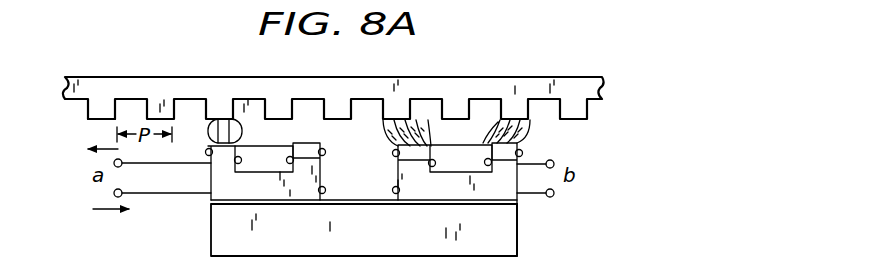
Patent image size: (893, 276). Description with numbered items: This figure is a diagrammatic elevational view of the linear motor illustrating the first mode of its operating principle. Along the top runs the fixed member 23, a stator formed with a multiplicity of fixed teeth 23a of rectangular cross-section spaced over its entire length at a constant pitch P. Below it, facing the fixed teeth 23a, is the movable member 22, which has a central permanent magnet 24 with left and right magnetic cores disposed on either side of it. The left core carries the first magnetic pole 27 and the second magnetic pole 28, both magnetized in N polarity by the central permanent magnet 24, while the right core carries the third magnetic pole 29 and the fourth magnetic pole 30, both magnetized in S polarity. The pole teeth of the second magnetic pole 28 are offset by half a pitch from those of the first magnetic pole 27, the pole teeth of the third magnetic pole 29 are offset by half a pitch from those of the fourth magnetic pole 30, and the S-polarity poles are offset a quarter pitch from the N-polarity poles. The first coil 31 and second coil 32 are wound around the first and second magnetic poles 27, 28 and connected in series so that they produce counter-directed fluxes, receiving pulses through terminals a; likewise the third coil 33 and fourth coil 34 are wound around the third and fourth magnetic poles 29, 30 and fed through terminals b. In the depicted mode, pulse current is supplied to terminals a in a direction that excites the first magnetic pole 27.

The first movable member 22 is at (207, 227).
The fixed member 23 is at (126, 79).
The fixed teeth 23a is at (103, 122).
The central permanent magnet 24 is at (519, 230).
The first magnetic pole 27 is at (241, 118).
The second magnetic pole 28 is at (302, 142).
The third magnetic pole 29 is at (433, 143).
The fourth magnetic pole 30 is at (484, 140).
The first coil 31 is at (207, 150).
The second coil 32 is at (278, 145).
The third coil 33 is at (383, 140).
The fourth coil 34 is at (522, 152).